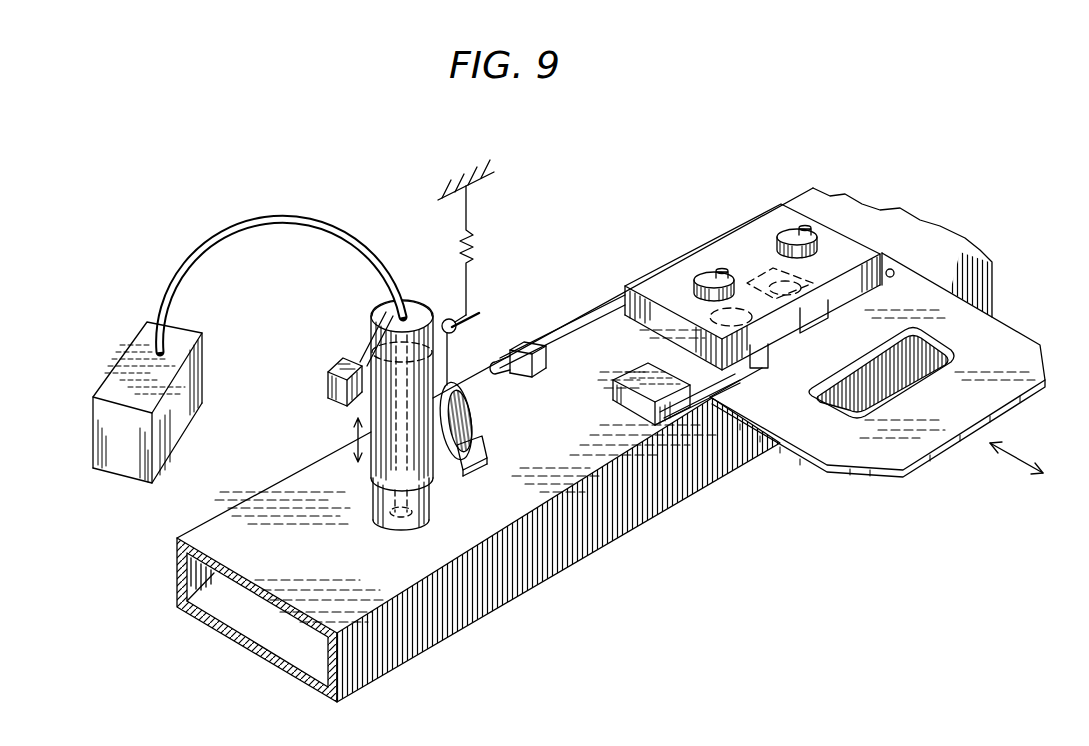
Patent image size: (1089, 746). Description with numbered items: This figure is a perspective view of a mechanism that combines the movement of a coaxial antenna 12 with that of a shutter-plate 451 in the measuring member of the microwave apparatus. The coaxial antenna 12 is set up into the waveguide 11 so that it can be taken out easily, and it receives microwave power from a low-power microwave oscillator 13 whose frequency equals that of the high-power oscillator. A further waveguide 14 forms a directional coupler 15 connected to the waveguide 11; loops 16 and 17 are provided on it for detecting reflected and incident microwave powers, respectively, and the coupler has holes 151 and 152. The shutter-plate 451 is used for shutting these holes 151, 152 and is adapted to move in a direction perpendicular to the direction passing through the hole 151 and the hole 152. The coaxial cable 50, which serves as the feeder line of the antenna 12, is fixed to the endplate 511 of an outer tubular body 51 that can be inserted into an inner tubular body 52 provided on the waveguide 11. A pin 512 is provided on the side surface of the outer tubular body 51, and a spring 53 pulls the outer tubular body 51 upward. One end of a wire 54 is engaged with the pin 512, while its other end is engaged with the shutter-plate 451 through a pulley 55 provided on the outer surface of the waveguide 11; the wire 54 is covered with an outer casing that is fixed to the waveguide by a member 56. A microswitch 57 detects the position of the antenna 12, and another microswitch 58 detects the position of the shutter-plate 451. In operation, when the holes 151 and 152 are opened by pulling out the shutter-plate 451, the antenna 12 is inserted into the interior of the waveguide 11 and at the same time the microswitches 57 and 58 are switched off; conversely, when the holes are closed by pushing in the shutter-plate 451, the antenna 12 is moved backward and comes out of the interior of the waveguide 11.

The waveguide 11 is at (548, 568).
The coaxial antenna 12 is at (405, 488).
The low-power microwave oscillator 13 is at (123, 365).
The waveguide 14 is at (837, 243).
The directional coupler 15 is at (877, 354).
The loop 16 is at (708, 278).
The loop 17 is at (797, 228).
The coaxial cable 50 is at (256, 234).
The outer tubular body 51 is at (371, 407).
The inner tubular body 52 is at (380, 503).
The spring 53 is at (470, 245).
The wire 54 is at (893, 292).
The pulley 55 is at (468, 380).
The member 56 is at (531, 344).
The microswitch 57 is at (330, 374).
The microswitch 58 is at (612, 378).
The hole 151 is at (690, 320).
The hole 152 is at (787, 280).
The shutter-plate 451 is at (885, 450).
The endplate 511 is at (420, 308).
The pin 512 is at (472, 313).